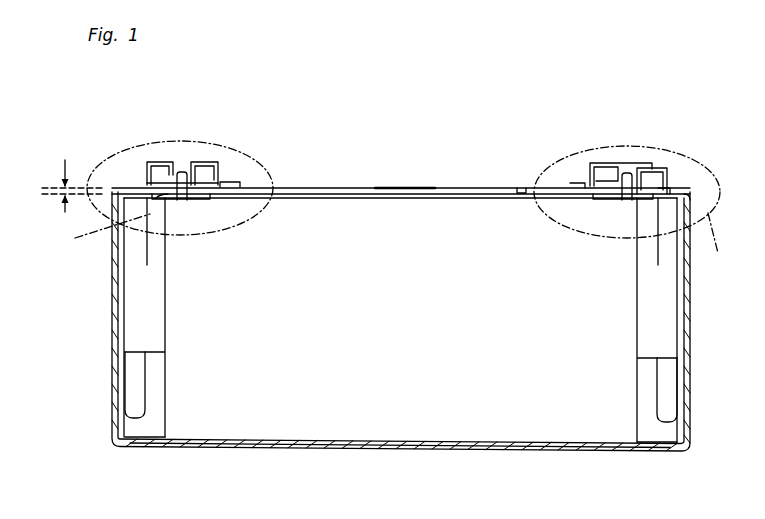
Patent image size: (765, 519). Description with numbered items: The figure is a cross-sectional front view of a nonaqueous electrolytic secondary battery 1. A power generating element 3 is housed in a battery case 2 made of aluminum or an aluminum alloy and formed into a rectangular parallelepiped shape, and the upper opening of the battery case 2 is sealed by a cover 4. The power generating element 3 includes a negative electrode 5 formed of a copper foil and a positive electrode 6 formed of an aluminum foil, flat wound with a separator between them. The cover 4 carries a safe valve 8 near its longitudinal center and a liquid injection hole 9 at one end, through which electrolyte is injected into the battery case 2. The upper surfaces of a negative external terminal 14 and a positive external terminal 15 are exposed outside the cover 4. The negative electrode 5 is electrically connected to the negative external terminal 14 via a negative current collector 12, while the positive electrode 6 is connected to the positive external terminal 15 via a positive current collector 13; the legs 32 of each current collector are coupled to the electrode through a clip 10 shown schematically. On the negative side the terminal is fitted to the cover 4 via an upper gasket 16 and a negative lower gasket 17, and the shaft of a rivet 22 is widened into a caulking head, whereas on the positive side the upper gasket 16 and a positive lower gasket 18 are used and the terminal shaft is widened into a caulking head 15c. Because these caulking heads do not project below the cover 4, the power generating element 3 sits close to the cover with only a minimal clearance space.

The nonaqueous electrolytic secondary battery 1 is at (688, 110).
The battery case 2 is at (322, 445).
The power generating element 3 is at (485, 446).
The cover 4 is at (482, 187).
The negative electrode 5 is at (159, 432).
The positive electrode 6 is at (649, 444).
The safe valve 8 is at (404, 187).
The liquid injection hole 9 is at (521, 187).
The clip 10 is at (135, 327).
The negative current collector 12 is at (125, 378).
The positive current collector 13 is at (678, 387).
The negative external terminal 14 is at (208, 156).
The positive external terminal 15 is at (610, 160).
The caulking head 15c is at (655, 172).
The upper gasket 16 is at (145, 161).
The negative lower gasket 17 is at (212, 197).
The positive lower gasket 18 is at (645, 182).
The rivet 22 is at (212, 182).
The legs 32 is at (132, 398).